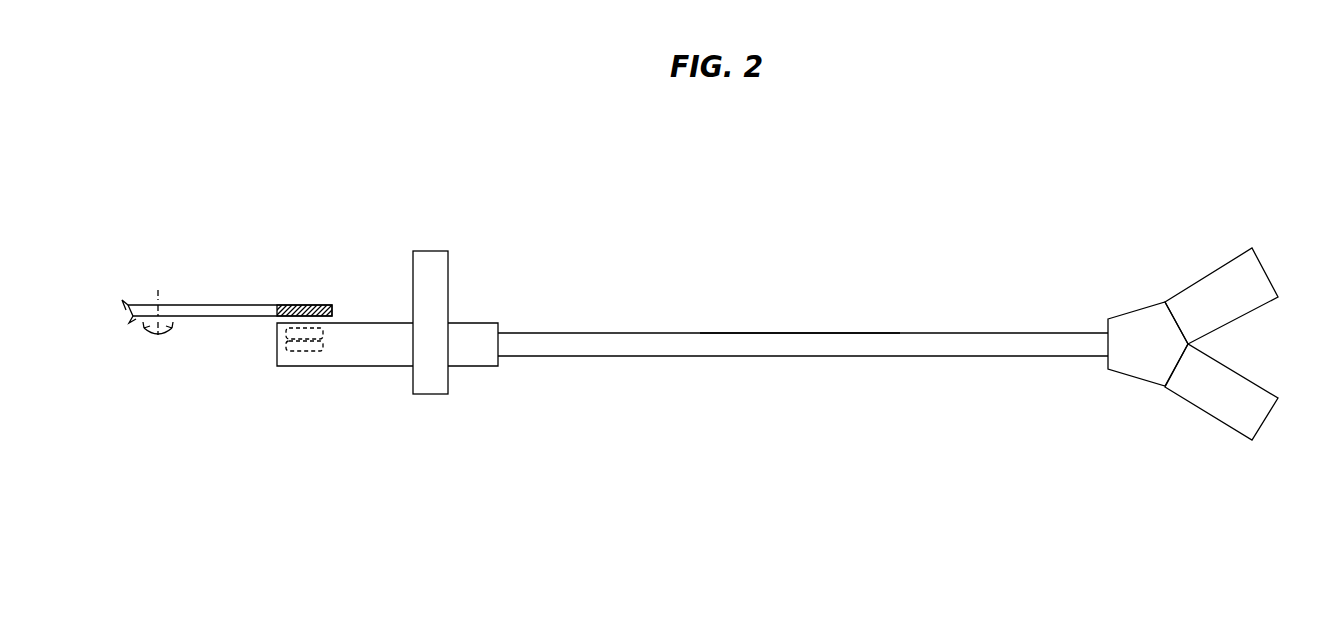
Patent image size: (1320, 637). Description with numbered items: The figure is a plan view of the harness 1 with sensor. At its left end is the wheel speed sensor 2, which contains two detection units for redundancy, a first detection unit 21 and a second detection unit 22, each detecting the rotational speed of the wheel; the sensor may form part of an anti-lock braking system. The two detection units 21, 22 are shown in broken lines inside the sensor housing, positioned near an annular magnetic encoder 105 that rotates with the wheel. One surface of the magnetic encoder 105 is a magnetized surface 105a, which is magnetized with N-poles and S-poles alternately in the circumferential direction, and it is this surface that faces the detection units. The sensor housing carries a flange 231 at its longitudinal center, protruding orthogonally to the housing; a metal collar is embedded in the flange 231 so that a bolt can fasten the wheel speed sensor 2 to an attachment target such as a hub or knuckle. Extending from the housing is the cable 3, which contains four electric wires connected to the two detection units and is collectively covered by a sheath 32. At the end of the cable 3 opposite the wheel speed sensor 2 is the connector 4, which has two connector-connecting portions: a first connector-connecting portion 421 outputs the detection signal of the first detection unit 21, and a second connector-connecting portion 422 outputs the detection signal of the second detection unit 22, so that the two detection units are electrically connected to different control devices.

The harness with sensor 1 is at (1168, 150).
The wheel speed sensor 2 is at (342, 367).
The first detection unit 21 is at (277, 337).
The second detection unit 22 is at (277, 347).
The flange 231 is at (438, 266).
The cable 3 is at (768, 360).
The sheath 32 is at (800, 345).
The connector 4 is at (1127, 378).
The first connector-connecting portion 421 is at (1203, 272).
The second connector-connecting portion 422 is at (1203, 413).
The magnetic encoder 105 is at (287, 303).
The magnetized surface 105a is at (316, 323).